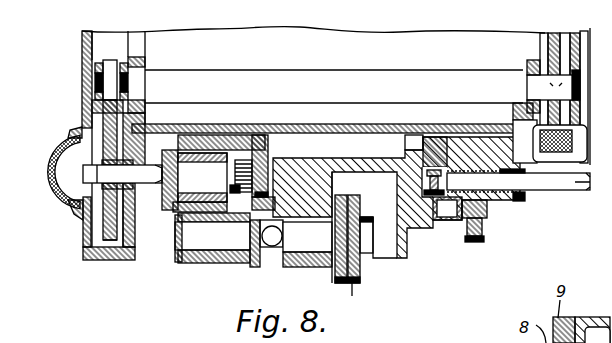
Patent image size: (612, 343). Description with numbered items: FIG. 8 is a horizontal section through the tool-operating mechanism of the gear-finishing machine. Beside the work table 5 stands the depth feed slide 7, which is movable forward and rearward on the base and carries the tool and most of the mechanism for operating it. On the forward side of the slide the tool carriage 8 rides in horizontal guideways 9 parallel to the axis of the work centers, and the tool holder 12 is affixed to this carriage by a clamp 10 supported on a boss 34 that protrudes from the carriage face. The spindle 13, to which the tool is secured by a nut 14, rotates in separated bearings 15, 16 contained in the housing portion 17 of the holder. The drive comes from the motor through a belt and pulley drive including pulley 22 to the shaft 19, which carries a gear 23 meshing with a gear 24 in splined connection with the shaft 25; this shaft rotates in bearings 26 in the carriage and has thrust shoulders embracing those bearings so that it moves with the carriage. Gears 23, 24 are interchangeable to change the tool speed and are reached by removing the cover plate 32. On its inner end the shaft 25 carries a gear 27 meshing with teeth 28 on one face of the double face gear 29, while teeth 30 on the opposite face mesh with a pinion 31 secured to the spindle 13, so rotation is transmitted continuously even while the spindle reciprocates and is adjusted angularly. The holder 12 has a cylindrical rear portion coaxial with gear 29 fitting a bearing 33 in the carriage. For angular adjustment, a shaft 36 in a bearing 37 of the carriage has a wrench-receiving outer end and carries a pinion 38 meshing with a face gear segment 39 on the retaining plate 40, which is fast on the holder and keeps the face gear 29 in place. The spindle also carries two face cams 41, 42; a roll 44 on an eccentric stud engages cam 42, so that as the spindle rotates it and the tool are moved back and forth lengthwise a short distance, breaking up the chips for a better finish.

The work table 5 is at (414, 4).
The depth feed slide 7 is at (343, 36).
The tool carriage 8 is at (215, 128).
The guideways 9 is at (314, 124).
The clamp 10 is at (472, 225).
The tool holder 12 is at (337, 160).
The spindle 13 is at (333, 258).
The nut 14 is at (377, 259).
The bearing 15 is at (180, 251).
The bearing 16 is at (296, 262).
The housing portion 17 is at (207, 266).
The shaft 19 is at (428, 83).
The pulley 22 is at (553, 36).
The gear 23 is at (98, 63).
The gear 24 is at (103, 113).
The shaft 25 is at (143, 175).
The bearings 26 is at (178, 128).
The gear 27 is at (265, 128).
The teeth 28 is at (235, 189).
The double face gear 29 is at (272, 212).
The teeth 30 is at (232, 235).
The pinion 31 is at (247, 266).
The cover plate 32 is at (82, 41).
The bearing 33 is at (297, 162).
The boss 34 is at (483, 222).
The shaft 36 is at (563, 191).
The bearing 37 is at (519, 201).
The pinion 38 is at (440, 140).
The face gear segment 39 is at (440, 142).
The retaining plate 40 is at (423, 204).
The face cam 41 is at (260, 230).
The face cam 42 is at (278, 247).
The roll 44 is at (253, 283).